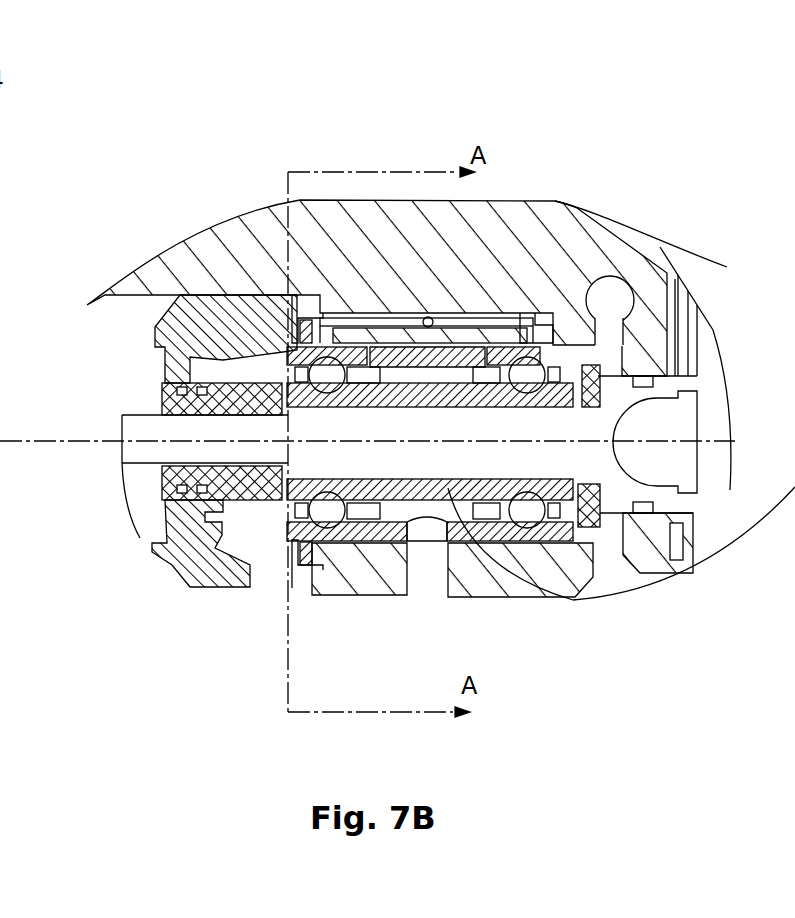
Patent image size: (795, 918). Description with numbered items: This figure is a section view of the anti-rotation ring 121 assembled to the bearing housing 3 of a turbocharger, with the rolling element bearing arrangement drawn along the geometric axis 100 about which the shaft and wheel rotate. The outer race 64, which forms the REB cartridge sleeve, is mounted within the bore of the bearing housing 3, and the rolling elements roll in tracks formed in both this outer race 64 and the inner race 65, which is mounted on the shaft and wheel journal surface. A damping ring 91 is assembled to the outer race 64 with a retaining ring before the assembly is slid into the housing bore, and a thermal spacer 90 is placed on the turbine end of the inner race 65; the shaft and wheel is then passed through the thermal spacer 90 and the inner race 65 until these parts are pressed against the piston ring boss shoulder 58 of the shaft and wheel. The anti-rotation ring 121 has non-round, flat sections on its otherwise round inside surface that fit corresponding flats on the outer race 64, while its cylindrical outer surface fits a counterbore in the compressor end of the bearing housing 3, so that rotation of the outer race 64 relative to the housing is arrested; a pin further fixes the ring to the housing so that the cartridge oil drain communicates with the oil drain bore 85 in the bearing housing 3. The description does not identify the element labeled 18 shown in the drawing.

The bearing housing 3 is at (515, 272).
The seal carrier 18 is at (270, 412).
The anti-rotation ring 121 is at (272, 330).
The geometric axis 100 is at (98, 443).
The damping ring 91 is at (300, 315).
The outer race 64 is at (397, 350).
The thermal spacer 90 is at (600, 396).
The piston ring boss shoulder 58 is at (683, 393).
The inner race 65 is at (90, 538).
The oil drain bore 85 is at (452, 588).